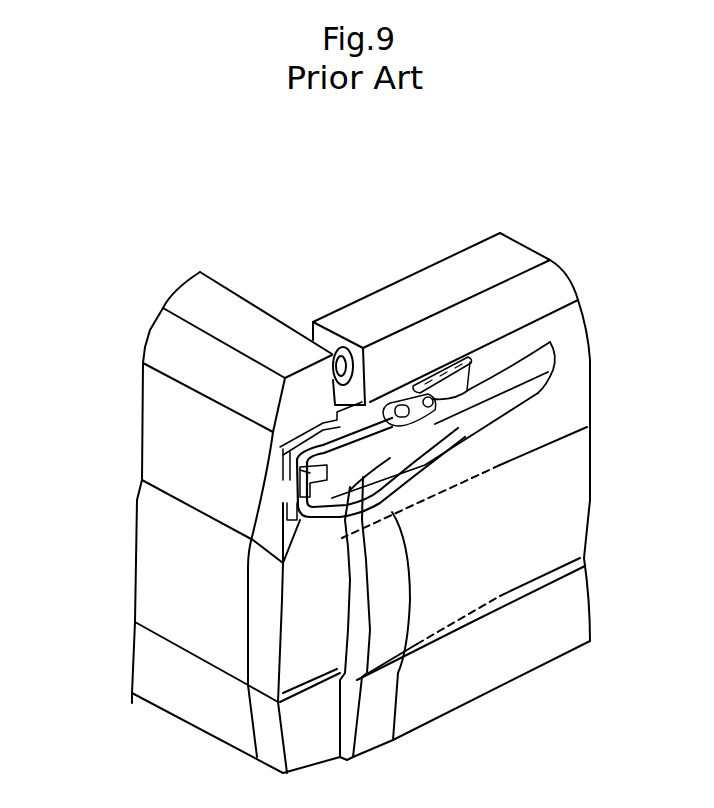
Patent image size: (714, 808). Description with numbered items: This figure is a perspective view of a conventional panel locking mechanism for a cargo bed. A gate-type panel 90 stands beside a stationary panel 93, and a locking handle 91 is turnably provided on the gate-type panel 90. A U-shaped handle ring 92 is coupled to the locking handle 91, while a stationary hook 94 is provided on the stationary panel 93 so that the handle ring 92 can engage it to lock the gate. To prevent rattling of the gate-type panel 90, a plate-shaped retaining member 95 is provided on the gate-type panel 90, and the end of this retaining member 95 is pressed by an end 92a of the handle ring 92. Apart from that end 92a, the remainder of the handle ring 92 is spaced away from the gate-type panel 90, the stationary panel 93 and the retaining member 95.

The gate-type panel 90 is at (533, 522).
The locking handle 91 is at (522, 394).
The handle ring 92 is at (373, 512).
The end of the handle ring 92a is at (290, 472).
The stationary panel 93 is at (218, 608).
The stationary hook 94 is at (300, 489).
The retaining member 95 is at (365, 525).